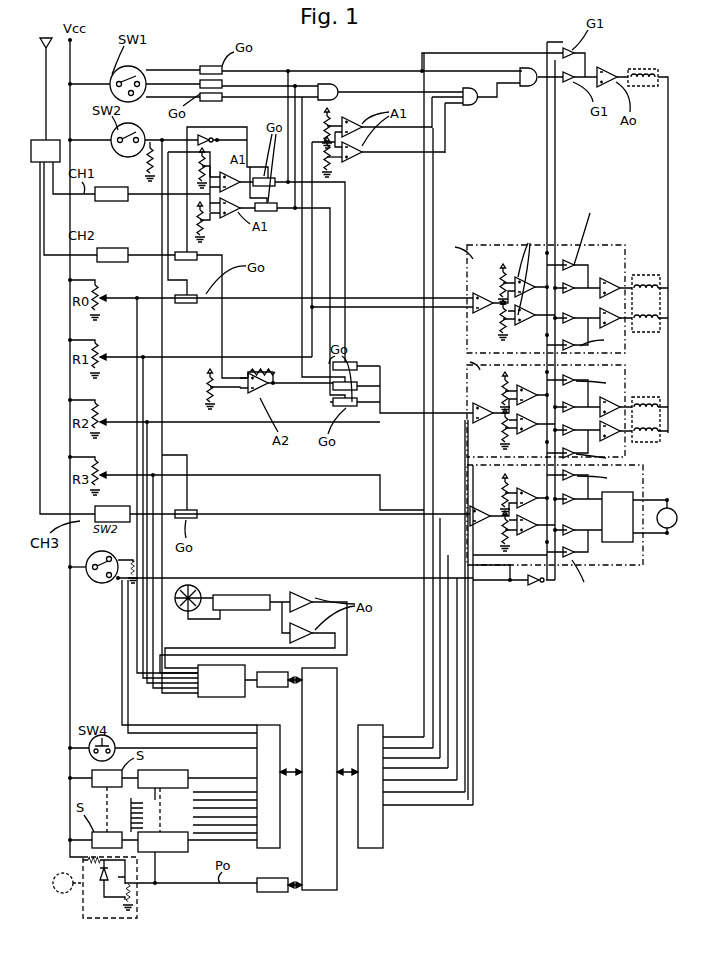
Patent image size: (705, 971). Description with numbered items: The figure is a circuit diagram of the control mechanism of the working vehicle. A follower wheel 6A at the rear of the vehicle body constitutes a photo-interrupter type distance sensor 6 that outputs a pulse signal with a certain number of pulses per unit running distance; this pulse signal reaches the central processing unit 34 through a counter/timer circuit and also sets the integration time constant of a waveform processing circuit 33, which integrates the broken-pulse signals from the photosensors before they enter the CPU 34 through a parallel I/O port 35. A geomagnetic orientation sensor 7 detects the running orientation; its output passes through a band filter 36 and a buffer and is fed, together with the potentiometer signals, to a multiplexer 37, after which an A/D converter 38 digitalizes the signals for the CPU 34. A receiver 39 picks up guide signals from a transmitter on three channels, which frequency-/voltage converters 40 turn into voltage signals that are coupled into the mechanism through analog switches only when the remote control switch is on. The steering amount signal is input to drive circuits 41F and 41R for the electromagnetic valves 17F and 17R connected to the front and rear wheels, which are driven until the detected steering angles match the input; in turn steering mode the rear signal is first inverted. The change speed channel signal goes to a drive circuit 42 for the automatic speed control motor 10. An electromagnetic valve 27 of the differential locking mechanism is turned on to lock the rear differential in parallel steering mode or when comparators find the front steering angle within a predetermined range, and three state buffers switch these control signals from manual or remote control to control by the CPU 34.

The receiver 39 is at (39, 121).
The frequency-/voltage converter 40 is at (125, 354).
The electromagnetic valve 27 is at (646, 61).
The drive circuit 41F is at (532, 275).
The electromagnetic valve 17F is at (648, 282).
The drive circuit 41R is at (565, 413).
The electromagnetic valve 17R is at (650, 400).
The drive circuit 42 is at (555, 540).
The automatic speed control motor 10 is at (657, 532).
The orientation sensor 7 is at (181, 617).
The band filter 36 is at (241, 613).
The multiplexer 37 is at (221, 697).
The A/D converter 38 is at (275, 697).
The parallel I/O port 35 is at (345, 808).
The central processing unit 34 is at (319, 806).
The waveform processing circuit 33 is at (181, 831).
The distance sensor 6 is at (114, 906).
The follower wheel 6A is at (68, 909).